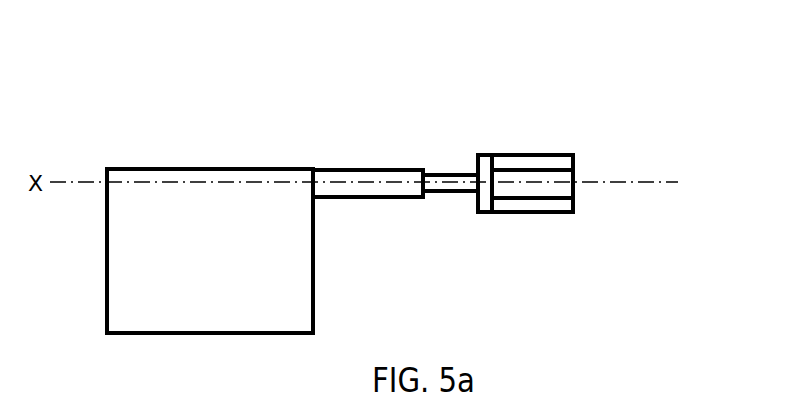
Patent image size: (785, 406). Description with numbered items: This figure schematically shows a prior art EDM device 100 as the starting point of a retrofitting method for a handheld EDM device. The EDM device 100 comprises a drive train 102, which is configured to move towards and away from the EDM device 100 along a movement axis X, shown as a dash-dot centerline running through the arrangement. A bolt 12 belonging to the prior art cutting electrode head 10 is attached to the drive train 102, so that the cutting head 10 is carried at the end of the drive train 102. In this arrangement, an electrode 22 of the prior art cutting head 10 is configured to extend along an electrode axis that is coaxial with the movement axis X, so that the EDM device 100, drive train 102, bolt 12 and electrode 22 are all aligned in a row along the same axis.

The cutting electrode head 10 is at (648, 132).
The bolt 12 is at (439, 172).
The electrode 22 is at (533, 190).
The EDM device 100 is at (185, 167).
The drive train 102 is at (357, 167).